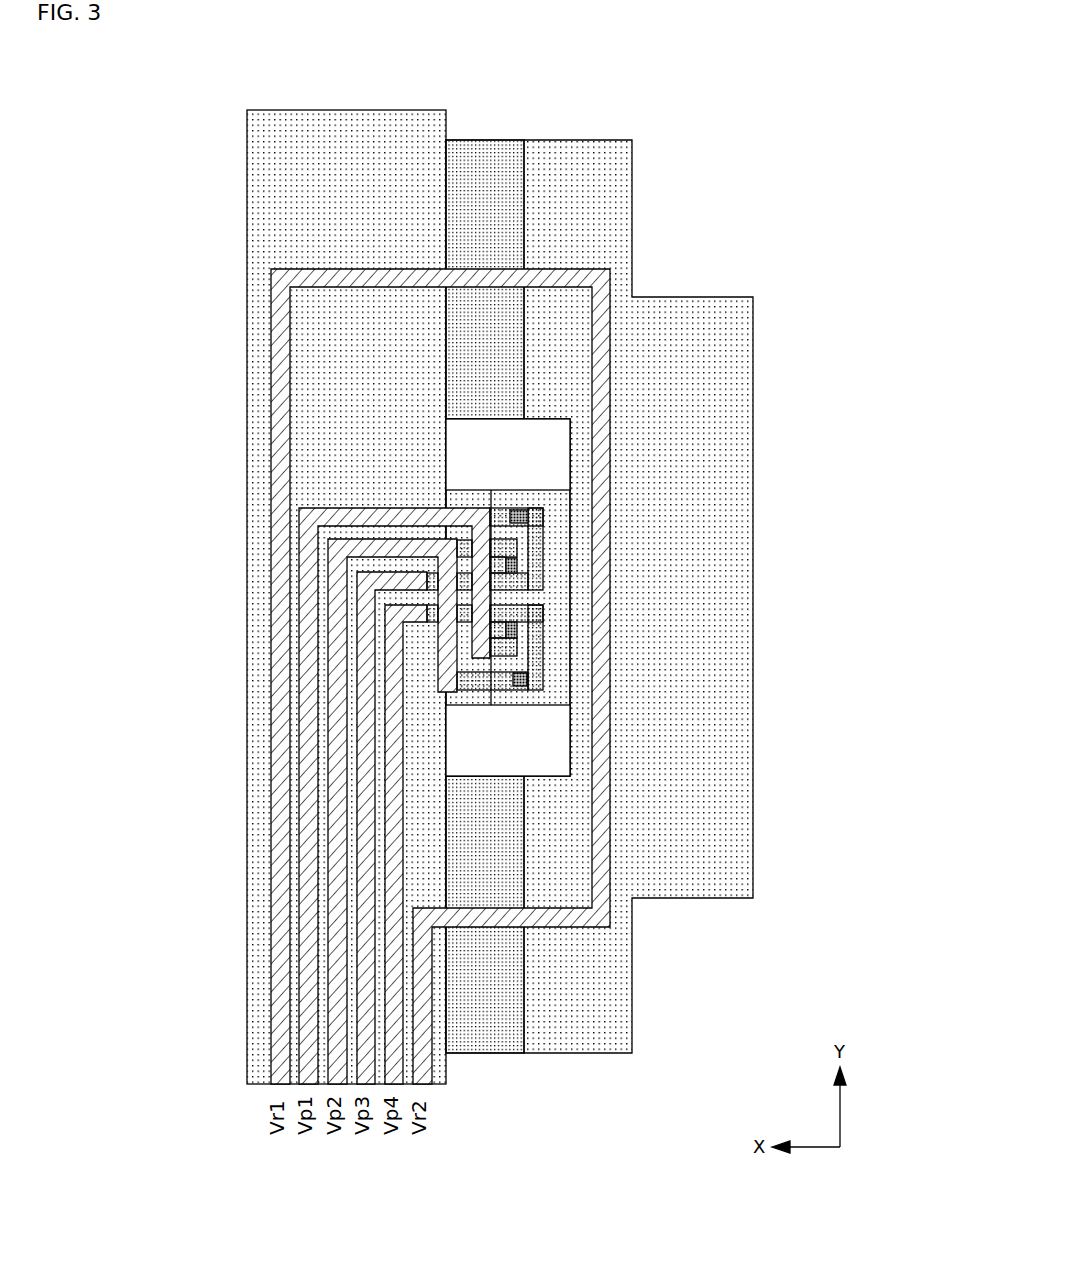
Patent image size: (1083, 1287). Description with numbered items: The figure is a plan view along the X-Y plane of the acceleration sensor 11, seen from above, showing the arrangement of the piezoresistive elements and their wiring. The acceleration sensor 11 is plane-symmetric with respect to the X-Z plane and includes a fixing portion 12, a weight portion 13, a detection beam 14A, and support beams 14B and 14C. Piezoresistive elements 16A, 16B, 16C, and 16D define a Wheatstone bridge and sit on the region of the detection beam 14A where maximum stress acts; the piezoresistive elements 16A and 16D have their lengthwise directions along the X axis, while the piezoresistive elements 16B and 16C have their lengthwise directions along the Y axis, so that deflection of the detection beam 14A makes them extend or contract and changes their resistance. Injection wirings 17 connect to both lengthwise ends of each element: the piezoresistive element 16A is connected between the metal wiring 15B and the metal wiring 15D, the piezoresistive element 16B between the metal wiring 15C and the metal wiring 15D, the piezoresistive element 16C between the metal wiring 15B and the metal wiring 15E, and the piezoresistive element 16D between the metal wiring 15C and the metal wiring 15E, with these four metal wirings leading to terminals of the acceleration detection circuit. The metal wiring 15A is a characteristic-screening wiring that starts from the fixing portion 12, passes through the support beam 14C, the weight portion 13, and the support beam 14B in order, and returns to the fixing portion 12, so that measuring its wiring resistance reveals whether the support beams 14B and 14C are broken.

The acceleration sensor 11 is at (213, 77).
The fixing portion 12 is at (249, 148).
The weight portion 13 is at (632, 150).
The detection beam 14A is at (537, 489).
The support beam 14B is at (494, 787).
The support beam 14C is at (490, 150).
The metal wiring 15A is at (278, 622).
The metal wiring 15B is at (308, 647).
The metal wiring 15C is at (336, 678).
The metal wiring 15D is at (364, 707).
The metal wiring 15E is at (391, 733).
The piezoresistive element 16A is at (527, 518).
The piezoresistive element 16B is at (515, 567).
The piezoresistive element 16C is at (515, 632).
The piezoresistive element 16D is at (522, 681).
The injection wirings 17 is at (523, 508).